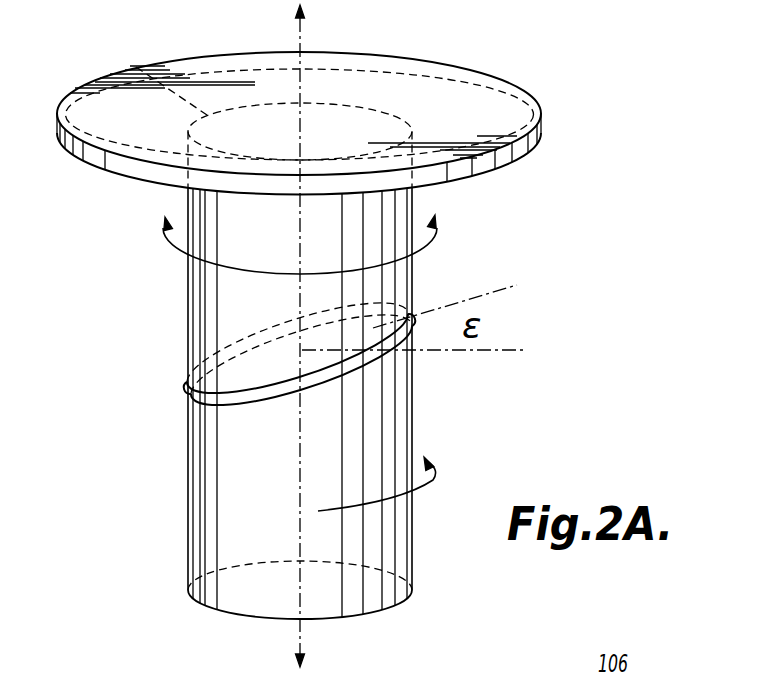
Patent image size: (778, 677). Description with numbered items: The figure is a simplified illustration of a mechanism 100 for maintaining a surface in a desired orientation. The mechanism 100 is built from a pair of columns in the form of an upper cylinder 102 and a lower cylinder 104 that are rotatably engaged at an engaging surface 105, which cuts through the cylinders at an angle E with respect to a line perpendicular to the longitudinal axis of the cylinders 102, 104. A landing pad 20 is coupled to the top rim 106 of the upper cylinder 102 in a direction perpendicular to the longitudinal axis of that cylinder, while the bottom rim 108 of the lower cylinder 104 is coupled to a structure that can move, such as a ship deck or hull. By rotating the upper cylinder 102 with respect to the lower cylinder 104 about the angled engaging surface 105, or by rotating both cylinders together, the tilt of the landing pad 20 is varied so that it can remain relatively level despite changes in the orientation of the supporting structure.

The landing pad 20 is at (519, 93).
The mechanism 100 is at (323, 389).
The upper cylinder 102 is at (208, 311).
The lower cylinder 104 is at (208, 493).
The engaging surface 105 is at (189, 390).
The top rim 106 is at (136, 67).
The bottom rim 108 is at (387, 605).